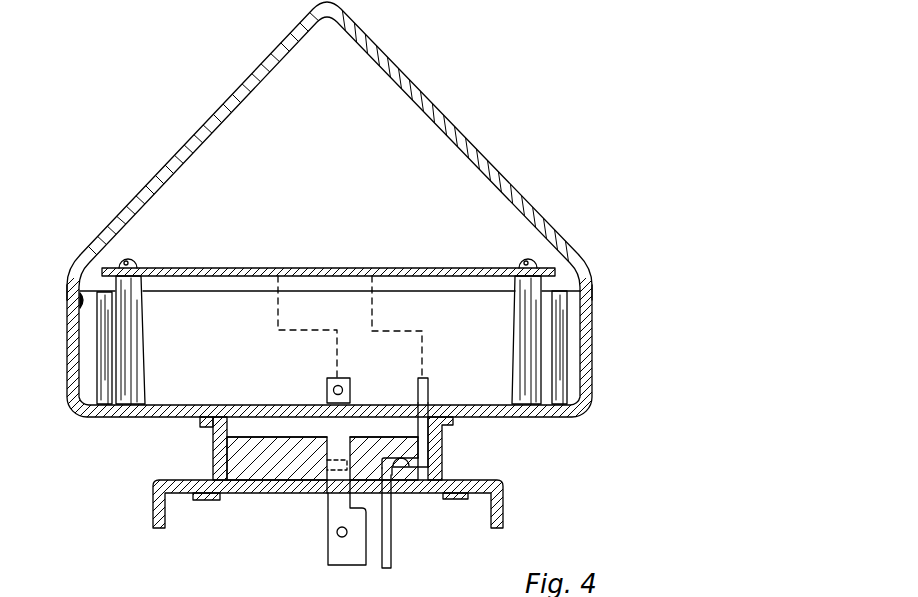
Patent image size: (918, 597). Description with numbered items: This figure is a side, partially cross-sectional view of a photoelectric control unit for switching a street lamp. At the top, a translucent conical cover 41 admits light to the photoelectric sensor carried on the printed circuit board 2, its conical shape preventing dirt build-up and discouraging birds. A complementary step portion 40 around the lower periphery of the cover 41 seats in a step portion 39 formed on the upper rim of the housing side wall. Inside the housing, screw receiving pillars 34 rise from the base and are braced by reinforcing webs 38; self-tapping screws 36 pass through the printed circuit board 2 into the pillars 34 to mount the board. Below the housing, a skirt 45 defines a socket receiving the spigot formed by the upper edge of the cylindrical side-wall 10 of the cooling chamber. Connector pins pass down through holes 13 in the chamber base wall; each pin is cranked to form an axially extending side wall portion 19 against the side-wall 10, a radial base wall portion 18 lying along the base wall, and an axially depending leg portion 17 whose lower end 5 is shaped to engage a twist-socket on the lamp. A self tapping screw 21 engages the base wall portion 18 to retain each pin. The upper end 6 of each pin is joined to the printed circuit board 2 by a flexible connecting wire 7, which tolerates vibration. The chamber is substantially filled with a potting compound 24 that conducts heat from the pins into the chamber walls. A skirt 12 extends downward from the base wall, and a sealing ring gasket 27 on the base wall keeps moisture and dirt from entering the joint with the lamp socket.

The translucent conical cover 41 is at (437, 107).
The complementary step portion 40 is at (68, 297).
The printed circuit board 2 is at (433, 268).
The self-tapping screw 36 is at (128, 258).
The screw receiving pillar 34 is at (135, 346).
The reinforcing web 38 is at (108, 348).
The step portion 39 is at (82, 308).
The flexible connecting wire 7 is at (279, 329).
The upper end 6 is at (327, 380).
The hole 13 is at (430, 403).
The base wall portion 18 is at (403, 474).
The leg portion 17 is at (392, 547).
The self tapping screw 21 is at (410, 461).
The skirt 45 is at (200, 426).
The cylindrical side-wall 10 is at (213, 440).
The side wall portion 19 is at (440, 442).
The potting compound 24 is at (288, 465).
The skirt 12 is at (153, 515).
The sealing ring gasket 27 is at (207, 500).
The lower end 5 is at (343, 557).